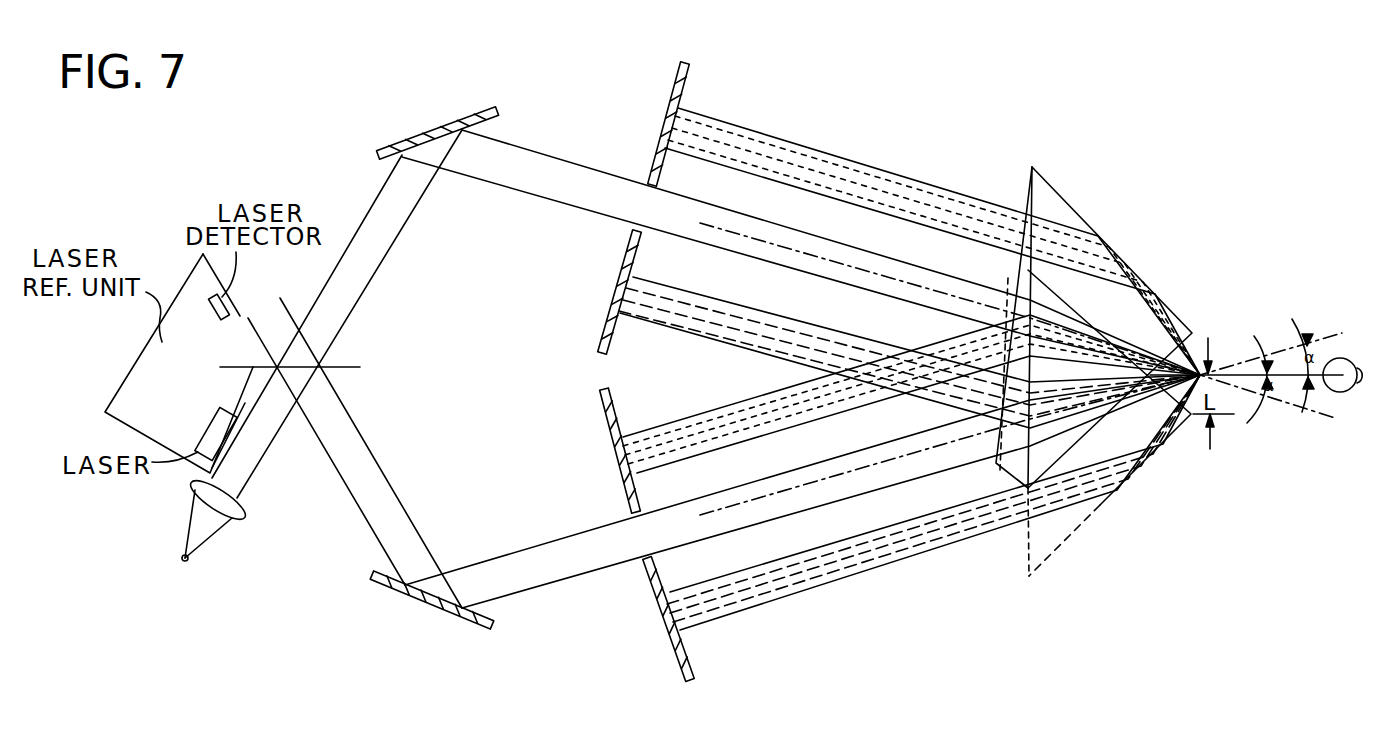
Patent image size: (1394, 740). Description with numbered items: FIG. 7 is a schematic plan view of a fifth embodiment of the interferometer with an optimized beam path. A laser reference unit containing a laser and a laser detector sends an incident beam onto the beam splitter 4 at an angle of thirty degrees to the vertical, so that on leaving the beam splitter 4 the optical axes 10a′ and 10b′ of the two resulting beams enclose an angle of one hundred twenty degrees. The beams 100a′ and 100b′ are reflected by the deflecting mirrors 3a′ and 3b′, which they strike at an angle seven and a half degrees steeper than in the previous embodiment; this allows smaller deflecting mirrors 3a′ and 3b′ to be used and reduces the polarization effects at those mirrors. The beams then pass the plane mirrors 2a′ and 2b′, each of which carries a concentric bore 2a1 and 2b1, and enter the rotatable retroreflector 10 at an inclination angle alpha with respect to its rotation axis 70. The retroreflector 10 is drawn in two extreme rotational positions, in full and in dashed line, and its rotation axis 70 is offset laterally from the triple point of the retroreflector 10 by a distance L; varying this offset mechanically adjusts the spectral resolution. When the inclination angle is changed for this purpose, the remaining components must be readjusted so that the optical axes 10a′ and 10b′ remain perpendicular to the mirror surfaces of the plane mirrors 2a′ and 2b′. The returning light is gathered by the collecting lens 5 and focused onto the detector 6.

The beam splitter 4 is at (352, 366).
The collecting lens 5 is at (248, 517).
The detector 6 is at (188, 562).
The deflecting mirror 3a′ is at (426, 148).
The deflecting mirror 3b′ is at (488, 632).
The plane mirror 2a′ is at (698, 82).
The concentric bore 2a1 is at (630, 231).
The plane mirror 2b′ is at (600, 388).
The concentric bore 2b1 is at (630, 515).
The beam 100a′ is at (568, 162).
The beam 100b′ is at (588, 562).
The optical axis 10a′ is at (857, 268).
The optical axis 10b′ is at (836, 474).
The retroreflector 10 is at (1068, 203).
The rotation axis 70 is at (1352, 391).